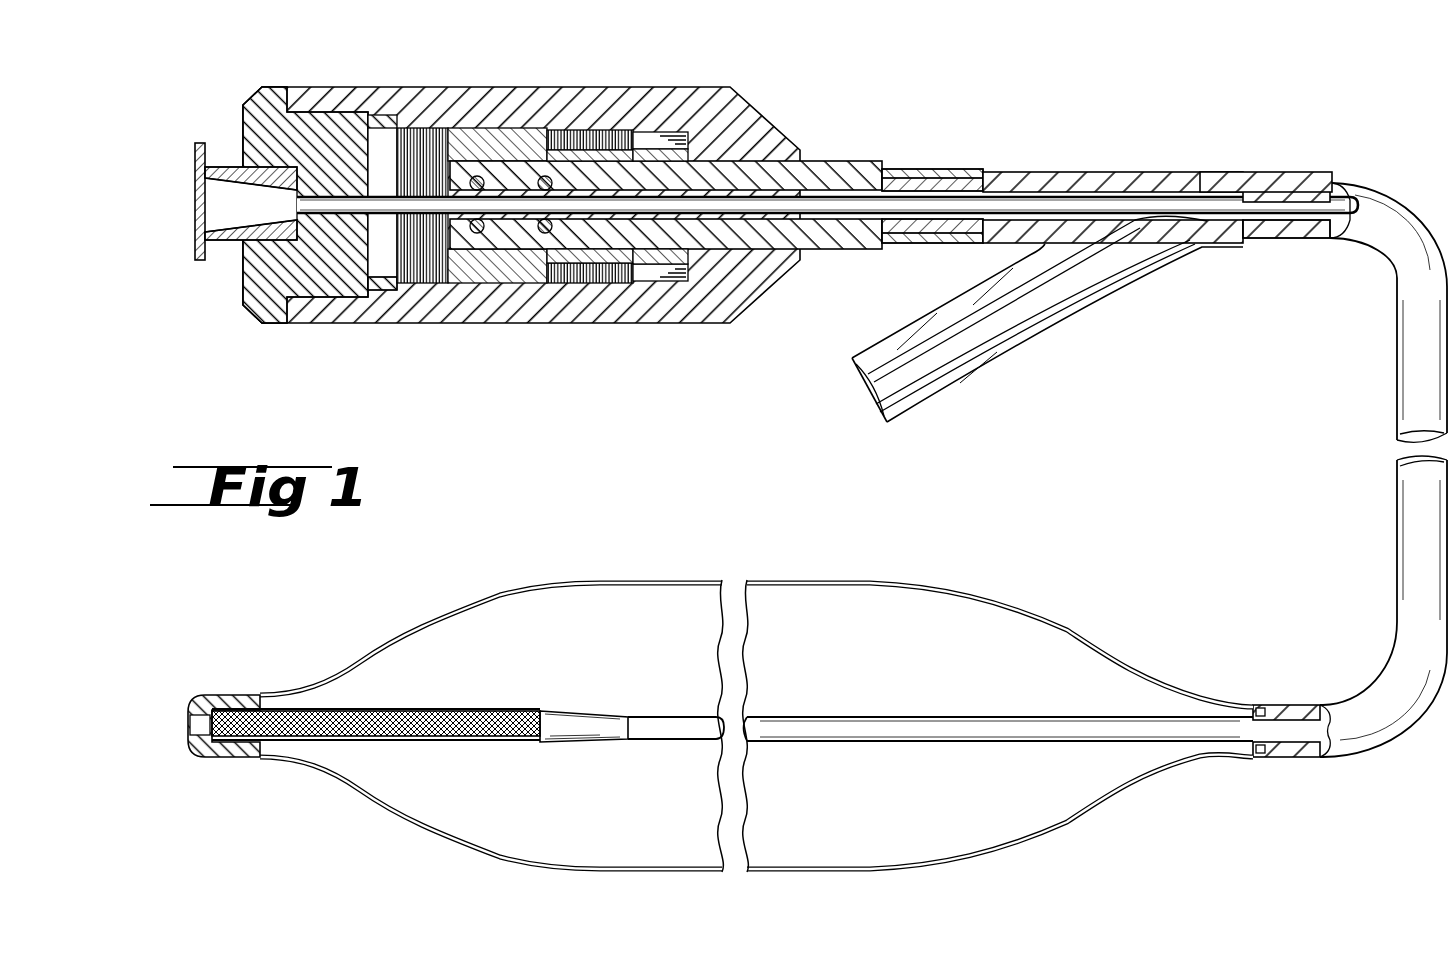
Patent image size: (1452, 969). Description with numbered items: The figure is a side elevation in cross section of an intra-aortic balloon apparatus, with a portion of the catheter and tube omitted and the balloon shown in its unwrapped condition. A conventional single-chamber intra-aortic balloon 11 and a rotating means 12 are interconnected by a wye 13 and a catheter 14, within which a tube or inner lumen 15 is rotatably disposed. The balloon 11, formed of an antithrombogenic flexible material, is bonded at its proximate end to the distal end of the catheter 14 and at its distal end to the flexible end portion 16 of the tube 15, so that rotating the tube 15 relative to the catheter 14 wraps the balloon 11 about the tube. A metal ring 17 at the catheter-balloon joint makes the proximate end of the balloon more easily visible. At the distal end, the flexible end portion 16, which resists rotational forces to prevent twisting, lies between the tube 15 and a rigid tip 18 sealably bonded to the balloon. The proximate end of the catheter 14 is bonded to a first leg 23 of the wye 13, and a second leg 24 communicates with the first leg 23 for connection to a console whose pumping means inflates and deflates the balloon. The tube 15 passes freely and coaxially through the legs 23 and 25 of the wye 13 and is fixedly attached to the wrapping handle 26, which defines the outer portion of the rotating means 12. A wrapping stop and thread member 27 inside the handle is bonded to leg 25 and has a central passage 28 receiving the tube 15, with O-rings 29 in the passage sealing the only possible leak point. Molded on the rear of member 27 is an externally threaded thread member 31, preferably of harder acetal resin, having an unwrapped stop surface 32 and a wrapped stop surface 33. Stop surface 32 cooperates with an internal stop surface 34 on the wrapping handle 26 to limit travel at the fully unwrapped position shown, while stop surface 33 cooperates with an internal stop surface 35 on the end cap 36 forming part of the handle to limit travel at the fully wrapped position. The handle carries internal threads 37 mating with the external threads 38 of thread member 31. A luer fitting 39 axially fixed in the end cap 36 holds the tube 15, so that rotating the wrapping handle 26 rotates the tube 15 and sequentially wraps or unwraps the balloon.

The intra-aortic balloon 11 is at (996, 572).
The rotating means 12 is at (639, 67).
The wye 13 is at (1184, 172).
The catheter 14 is at (1352, 186).
The tube or inner lumen 15 is at (1361, 204).
The flexible end portion 16 is at (506, 694).
The metal ring 17 is at (1262, 755).
The rigid tip 18 is at (204, 694).
The first leg 23 is at (1299, 242).
The second leg 24 is at (1080, 311).
The leg 25 is at (1093, 180).
The wrapping handle 26 is at (771, 296).
The wrapping stop and thread member 27 is at (851, 162).
The central passage 28 is at (990, 170).
The O-rings 29 is at (545, 176).
The externally threaded thread member 31 is at (470, 128).
The unwrapped stop surface 32 is at (690, 145).
The wrapped stop surface 33 is at (388, 116).
The internal stop surface 34 is at (672, 281).
The internal stop surface 35 is at (383, 290).
The end cap 36 is at (276, 323).
The internal threads 37 is at (590, 130).
The external threads 38 is at (444, 128).
The luer fitting 39 is at (222, 243).